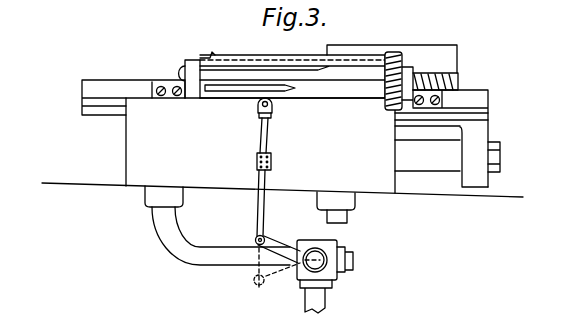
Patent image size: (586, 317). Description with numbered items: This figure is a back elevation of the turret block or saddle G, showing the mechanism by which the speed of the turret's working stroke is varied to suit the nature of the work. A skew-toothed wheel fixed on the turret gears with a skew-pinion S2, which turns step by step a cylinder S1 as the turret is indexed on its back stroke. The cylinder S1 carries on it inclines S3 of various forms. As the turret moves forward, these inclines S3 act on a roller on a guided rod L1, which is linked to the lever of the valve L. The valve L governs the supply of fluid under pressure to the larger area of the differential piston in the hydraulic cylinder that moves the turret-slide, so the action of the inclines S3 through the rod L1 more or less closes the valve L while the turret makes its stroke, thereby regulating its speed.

The cylinder S1 is at (252, 55).
The skew-pinion S2 is at (391, 52).
The inclines S3 is at (213, 105).
The turret block or saddle G is at (260, 145).
The valve L is at (333, 273).
The guided rod L1 is at (270, 180).